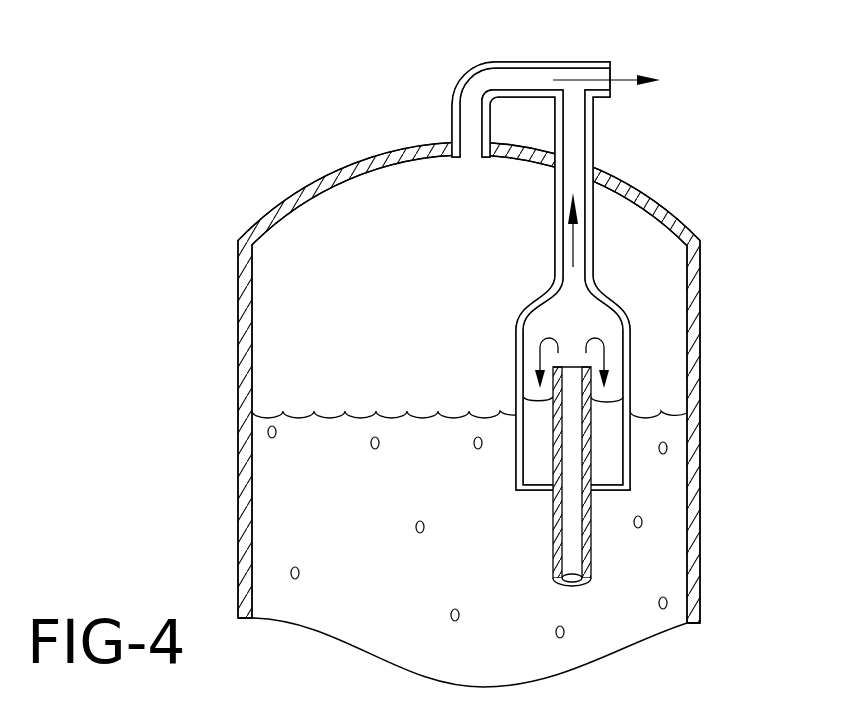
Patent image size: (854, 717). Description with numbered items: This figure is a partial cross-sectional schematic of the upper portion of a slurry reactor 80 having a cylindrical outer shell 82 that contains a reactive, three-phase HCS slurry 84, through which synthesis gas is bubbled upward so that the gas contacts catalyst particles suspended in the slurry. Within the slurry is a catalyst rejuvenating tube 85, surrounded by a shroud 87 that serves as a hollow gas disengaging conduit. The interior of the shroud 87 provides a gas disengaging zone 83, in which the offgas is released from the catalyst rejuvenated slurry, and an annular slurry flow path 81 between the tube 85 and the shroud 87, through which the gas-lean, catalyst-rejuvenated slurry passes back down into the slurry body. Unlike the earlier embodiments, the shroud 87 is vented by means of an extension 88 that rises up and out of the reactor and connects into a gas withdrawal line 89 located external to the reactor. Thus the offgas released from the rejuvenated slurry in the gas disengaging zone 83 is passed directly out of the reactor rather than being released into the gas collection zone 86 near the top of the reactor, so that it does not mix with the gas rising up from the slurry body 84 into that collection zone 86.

The slurry reactor 80 is at (226, 188).
The annular slurry flow path 81 is at (590, 339).
The cylindrical outer shell 82 is at (700, 487).
The gas disengaging zone 83 is at (568, 305).
The HCS slurry 84 is at (332, 481).
The catalyst rejuvenating tube 85 is at (555, 528).
The gas collection zone 86 is at (343, 252).
The shroud 87 is at (518, 338).
The extension 88 is at (593, 153).
The gas withdrawal line 89 is at (547, 62).